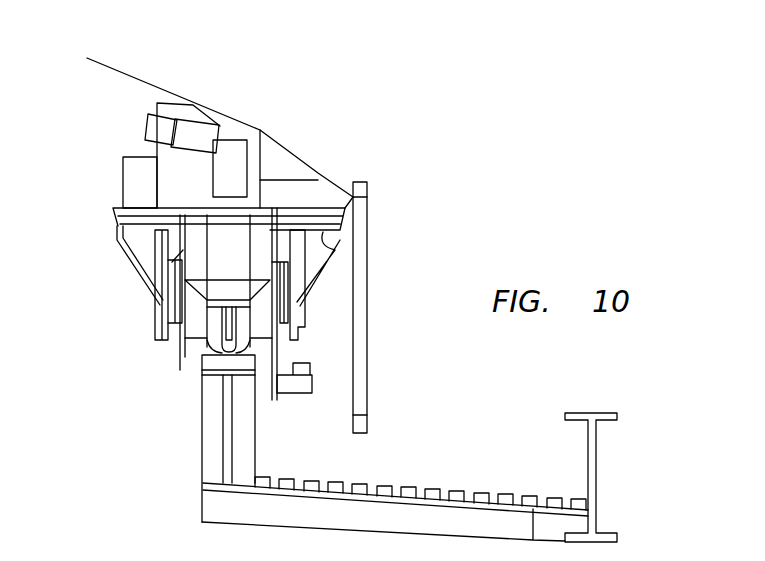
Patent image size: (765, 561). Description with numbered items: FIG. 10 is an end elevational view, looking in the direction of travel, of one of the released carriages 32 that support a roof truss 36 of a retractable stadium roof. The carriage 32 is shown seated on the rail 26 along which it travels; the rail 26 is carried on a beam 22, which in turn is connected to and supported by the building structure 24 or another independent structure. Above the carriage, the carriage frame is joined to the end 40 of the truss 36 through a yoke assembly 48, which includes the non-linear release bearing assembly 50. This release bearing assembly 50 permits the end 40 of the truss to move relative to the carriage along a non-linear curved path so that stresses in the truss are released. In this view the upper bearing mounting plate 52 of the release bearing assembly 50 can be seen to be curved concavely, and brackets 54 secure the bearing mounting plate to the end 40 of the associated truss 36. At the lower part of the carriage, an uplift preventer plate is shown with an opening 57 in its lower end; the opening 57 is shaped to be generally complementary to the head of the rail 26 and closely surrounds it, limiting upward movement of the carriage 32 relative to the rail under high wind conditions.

The beam 22 is at (202, 474).
The building structure 24 is at (600, 466).
The rail 26 is at (227, 373).
The carriage 32 is at (342, 162).
The roof truss 36 is at (338, 249).
The end of truss 40 is at (273, 147).
The yoke assembly 48 is at (150, 283).
The release bearing assembly 50 is at (115, 258).
The upper bearing mounting plate 52 is at (112, 213).
The brackets 54 is at (138, 182).
The opening 57 is at (212, 343).